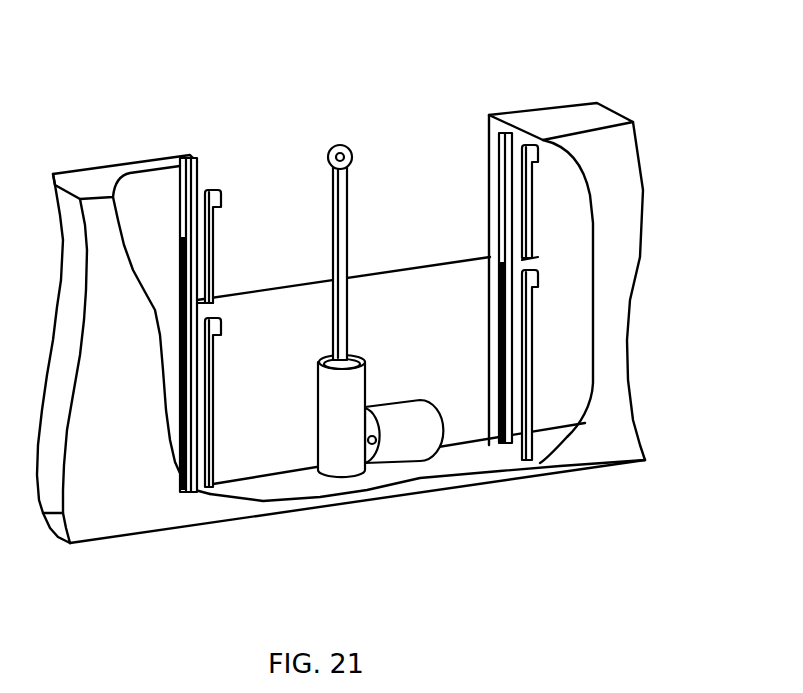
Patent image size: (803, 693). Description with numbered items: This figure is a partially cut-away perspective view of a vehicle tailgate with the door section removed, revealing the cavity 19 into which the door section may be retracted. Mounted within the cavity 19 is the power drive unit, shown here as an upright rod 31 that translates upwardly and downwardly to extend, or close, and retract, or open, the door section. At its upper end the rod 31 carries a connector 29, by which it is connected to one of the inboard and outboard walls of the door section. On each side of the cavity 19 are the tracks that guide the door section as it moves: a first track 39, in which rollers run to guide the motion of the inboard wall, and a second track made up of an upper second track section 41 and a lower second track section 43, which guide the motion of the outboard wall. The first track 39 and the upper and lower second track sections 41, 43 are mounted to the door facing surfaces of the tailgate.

The cavity 19 is at (453, 383).
The connector 29 is at (352, 150).
The rod 31 is at (350, 247).
The first track 39 is at (199, 175).
The upper second track section 41 is at (220, 247).
The lower second track section 43 is at (213, 403).